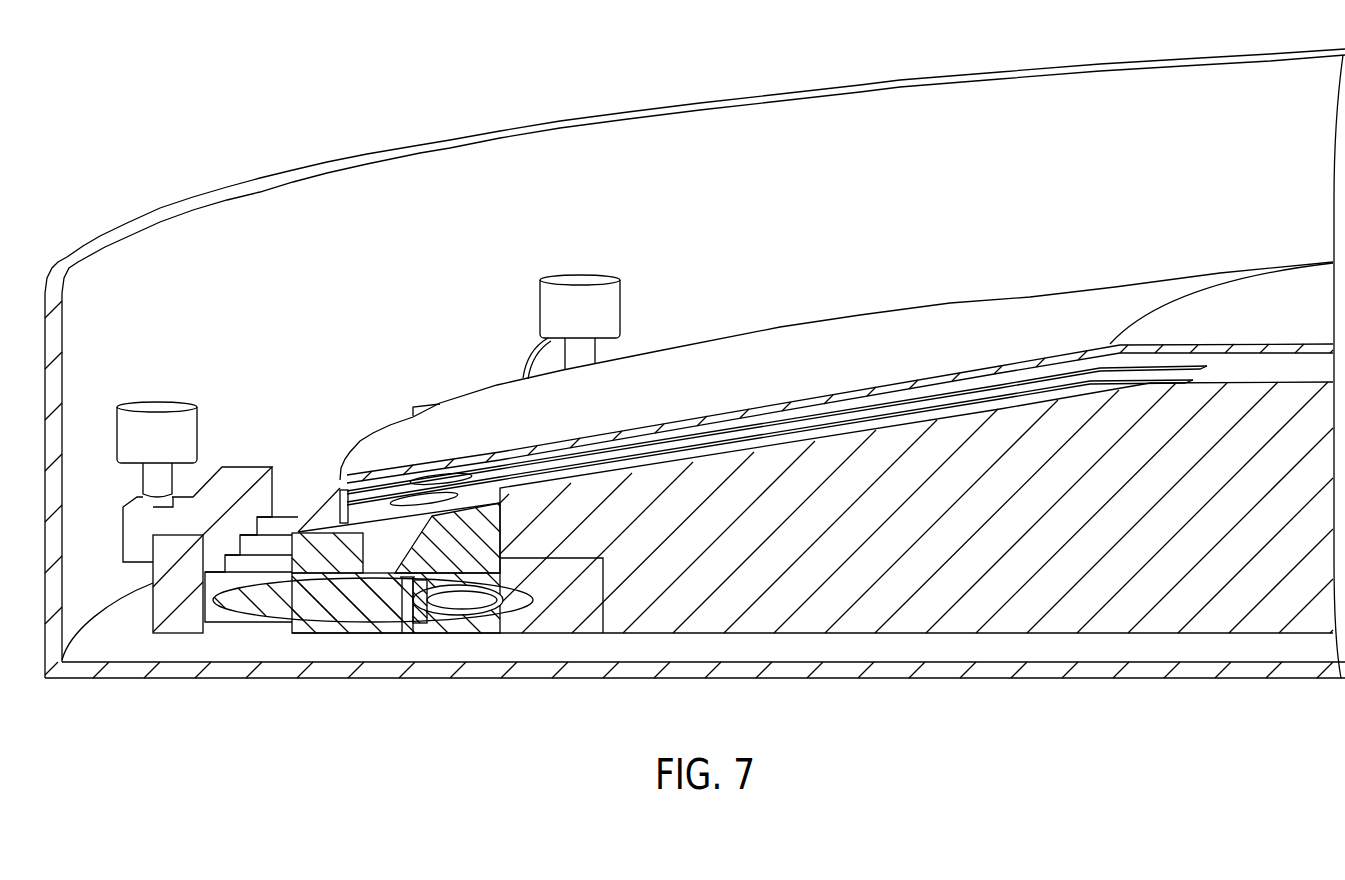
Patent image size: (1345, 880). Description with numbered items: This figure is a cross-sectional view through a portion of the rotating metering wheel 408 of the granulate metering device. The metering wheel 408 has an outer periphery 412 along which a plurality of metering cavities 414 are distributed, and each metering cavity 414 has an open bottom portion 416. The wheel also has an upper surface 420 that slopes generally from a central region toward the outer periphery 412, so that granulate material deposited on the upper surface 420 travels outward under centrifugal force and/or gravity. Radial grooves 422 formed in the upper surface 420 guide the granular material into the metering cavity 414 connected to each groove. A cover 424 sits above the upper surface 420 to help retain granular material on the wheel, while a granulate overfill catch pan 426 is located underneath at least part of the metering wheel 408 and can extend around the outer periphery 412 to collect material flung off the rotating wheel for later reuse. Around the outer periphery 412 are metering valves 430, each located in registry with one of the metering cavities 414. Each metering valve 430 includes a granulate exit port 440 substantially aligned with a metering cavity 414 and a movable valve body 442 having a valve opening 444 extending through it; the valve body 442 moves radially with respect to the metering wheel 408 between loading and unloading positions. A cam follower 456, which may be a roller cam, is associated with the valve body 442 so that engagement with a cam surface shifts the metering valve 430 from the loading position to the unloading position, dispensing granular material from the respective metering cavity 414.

The metering wheel 408 is at (895, 440).
The outer periphery 412 is at (323, 507).
The metering cavities 414 is at (412, 488).
The open bottom portion 416 is at (365, 550).
The upper surface 420 is at (1008, 390).
The radial grooves 422 is at (788, 418).
The cover 424 is at (1117, 292).
The granulate overfill catch pan 426 is at (629, 128).
The metering valves 430 is at (280, 635).
The granulate exit port 440 is at (337, 633).
The movable valve body 442 is at (393, 603).
The valve opening 444 is at (282, 619).
The cam follower 456 is at (245, 477).